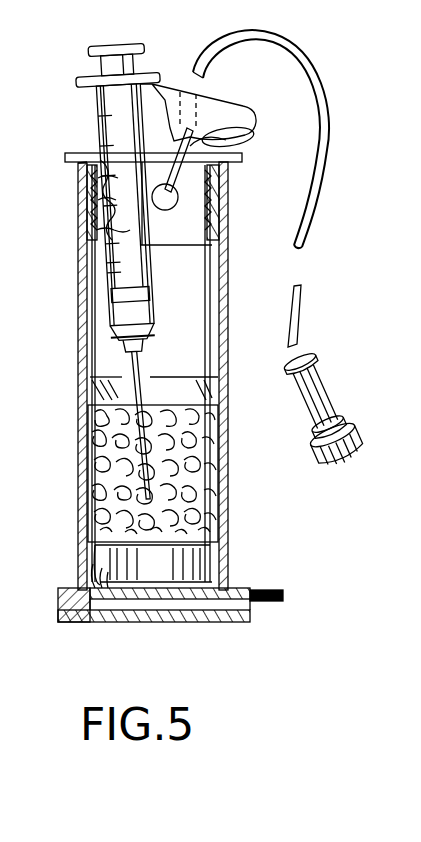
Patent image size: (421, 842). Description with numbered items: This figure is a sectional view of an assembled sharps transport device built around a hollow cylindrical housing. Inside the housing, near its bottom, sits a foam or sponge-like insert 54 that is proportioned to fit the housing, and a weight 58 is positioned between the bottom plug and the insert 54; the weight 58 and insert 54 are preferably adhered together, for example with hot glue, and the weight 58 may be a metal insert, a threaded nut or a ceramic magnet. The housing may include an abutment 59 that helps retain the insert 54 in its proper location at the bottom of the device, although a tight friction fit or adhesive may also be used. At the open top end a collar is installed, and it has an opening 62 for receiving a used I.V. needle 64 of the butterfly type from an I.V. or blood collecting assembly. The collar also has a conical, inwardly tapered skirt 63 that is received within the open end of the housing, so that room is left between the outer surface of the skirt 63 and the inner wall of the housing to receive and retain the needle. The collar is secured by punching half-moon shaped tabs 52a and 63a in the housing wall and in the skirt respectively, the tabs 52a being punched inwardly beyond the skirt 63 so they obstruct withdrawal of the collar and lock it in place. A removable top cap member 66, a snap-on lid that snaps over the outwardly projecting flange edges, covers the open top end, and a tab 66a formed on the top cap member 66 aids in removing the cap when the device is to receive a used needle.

The half-moon shaped tabs 52a is at (100, 226).
The foam or sponge-like insert 54 is at (212, 463).
The weight 58 is at (205, 560).
The abutment 59 is at (228, 345).
The opening 62 is at (170, 212).
The conical skirt 63 is at (108, 162).
The half-moon shaped tabs 63a is at (250, 142).
The used I.V. needle 64 is at (168, 148).
The top cap member 66 is at (166, 624).
The tab 66a is at (266, 603).